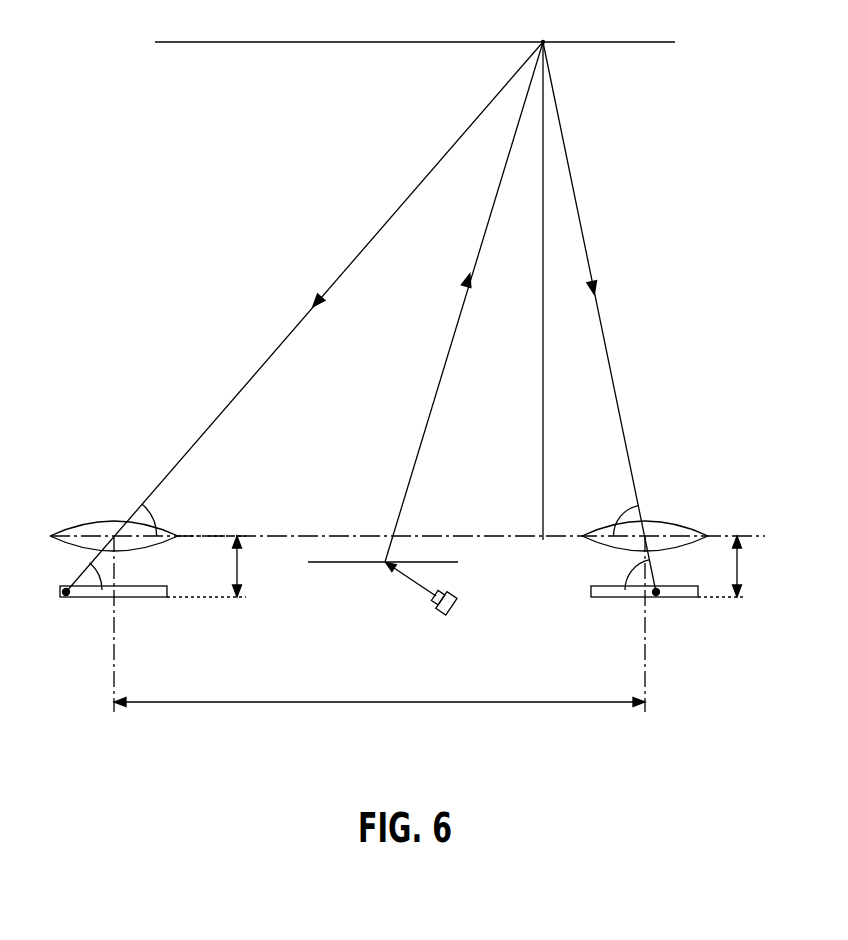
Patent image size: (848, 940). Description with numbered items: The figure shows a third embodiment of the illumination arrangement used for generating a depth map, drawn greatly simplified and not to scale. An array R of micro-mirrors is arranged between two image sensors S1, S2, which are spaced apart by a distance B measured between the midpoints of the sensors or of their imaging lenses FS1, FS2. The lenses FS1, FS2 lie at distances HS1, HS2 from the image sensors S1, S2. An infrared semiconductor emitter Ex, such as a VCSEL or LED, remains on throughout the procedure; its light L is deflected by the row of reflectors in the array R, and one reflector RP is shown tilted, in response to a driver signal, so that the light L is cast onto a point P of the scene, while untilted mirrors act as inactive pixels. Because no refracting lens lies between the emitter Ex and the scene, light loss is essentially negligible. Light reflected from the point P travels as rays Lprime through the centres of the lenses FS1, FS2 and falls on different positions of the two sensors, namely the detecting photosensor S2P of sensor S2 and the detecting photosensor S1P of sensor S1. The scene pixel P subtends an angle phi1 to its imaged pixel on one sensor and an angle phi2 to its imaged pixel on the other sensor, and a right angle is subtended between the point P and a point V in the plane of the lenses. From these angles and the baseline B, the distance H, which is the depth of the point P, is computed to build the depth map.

The point P is at (542, 27).
The point V is at (541, 540).
The distance H is at (543, 362).
The light ray Lprime is at (283, 340).
The light ray L is at (425, 425).
The array of micro-mirrors R is at (420, 557).
The reflector RP is at (384, 564).
The infrared semiconductor emitter Ex is at (440, 609).
The imaging lens FS1 is at (82, 523).
The imaging lens FS2 is at (677, 527).
The image sensor S2 is at (145, 598).
The detecting photosensor S2P is at (70, 598).
The image sensor S1 is at (682, 598).
The detecting photosensor S1P is at (658, 598).
The angle phi1 is at (140, 542).
The angle phi2 is at (623, 542).
The distance HS1 is at (238, 562).
The distance HS2 is at (738, 560).
The distance B is at (379, 714).